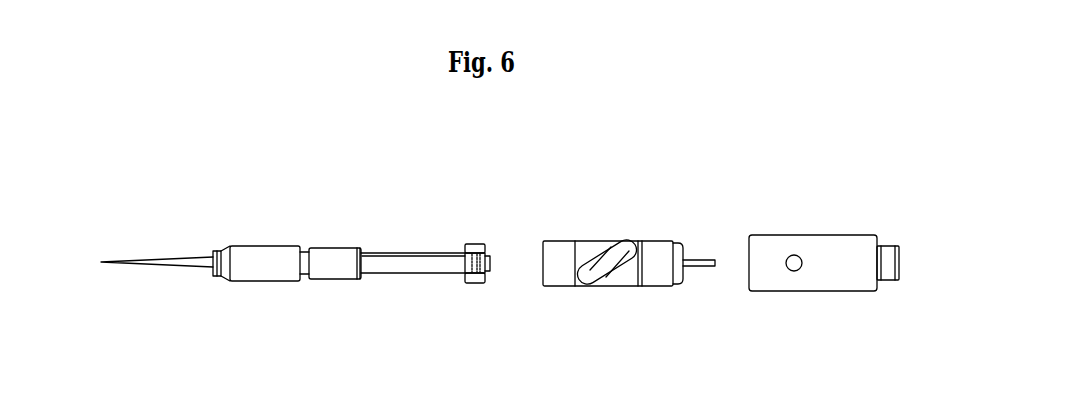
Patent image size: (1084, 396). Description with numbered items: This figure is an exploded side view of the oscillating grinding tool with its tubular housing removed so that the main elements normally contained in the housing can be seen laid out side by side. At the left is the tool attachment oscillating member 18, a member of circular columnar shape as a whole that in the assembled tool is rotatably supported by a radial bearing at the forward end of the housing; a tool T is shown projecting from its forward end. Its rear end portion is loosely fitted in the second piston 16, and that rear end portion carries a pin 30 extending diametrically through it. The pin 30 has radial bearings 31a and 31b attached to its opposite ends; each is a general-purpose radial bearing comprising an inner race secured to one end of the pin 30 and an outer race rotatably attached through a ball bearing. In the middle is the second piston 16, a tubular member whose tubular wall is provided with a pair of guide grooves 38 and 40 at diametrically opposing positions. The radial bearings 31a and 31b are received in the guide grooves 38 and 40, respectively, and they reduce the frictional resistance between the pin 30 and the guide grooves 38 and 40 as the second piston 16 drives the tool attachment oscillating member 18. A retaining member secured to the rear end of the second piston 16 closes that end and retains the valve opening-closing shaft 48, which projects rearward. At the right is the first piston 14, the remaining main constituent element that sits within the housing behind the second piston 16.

The needle/tip T is at (160, 255).
The tool attachment oscillating member 18 is at (306, 245).
The pin 30 is at (473, 268).
The radial bearing 31a is at (475, 245).
The radial bearing 31b is at (485, 283).
The second piston 16 is at (629, 245).
The guide groove 38 is at (604, 259).
The guide groove 40 is at (625, 249).
The valve opening-closing shaft 48 is at (697, 268).
The first piston 14 is at (812, 216).